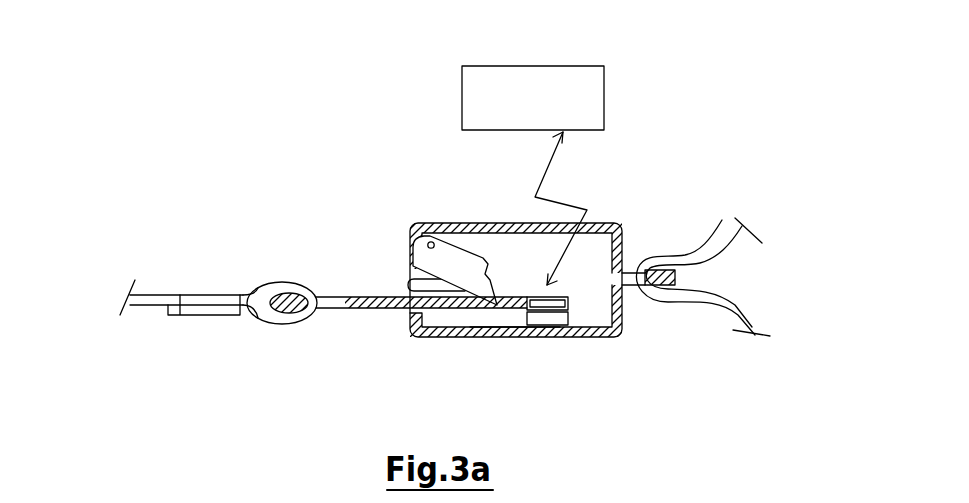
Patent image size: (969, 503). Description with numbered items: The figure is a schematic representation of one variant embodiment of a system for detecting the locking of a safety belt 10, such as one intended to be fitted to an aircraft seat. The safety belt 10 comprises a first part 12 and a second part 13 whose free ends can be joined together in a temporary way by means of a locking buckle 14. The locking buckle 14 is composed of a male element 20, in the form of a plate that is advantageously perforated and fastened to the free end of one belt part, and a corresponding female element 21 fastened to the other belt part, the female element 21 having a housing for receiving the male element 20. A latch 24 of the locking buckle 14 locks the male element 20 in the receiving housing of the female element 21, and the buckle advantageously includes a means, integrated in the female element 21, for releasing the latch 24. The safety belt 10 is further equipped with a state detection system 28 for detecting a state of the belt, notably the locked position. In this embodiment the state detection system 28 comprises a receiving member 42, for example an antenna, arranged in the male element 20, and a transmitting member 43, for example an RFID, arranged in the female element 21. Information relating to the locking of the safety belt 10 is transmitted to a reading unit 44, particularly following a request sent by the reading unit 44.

The safety belt 10 is at (213, 133).
The first part 12 is at (167, 297).
The second part 13 is at (725, 222).
The locking buckle 14 is at (443, 210).
The male element 20 is at (397, 307).
The female element 21 is at (515, 338).
The latch 24 is at (408, 264).
The state detection system 28 is at (575, 306).
The receiving member 42 is at (555, 303).
The transmitting member 43 is at (546, 321).
The reading unit 44 is at (533, 175).